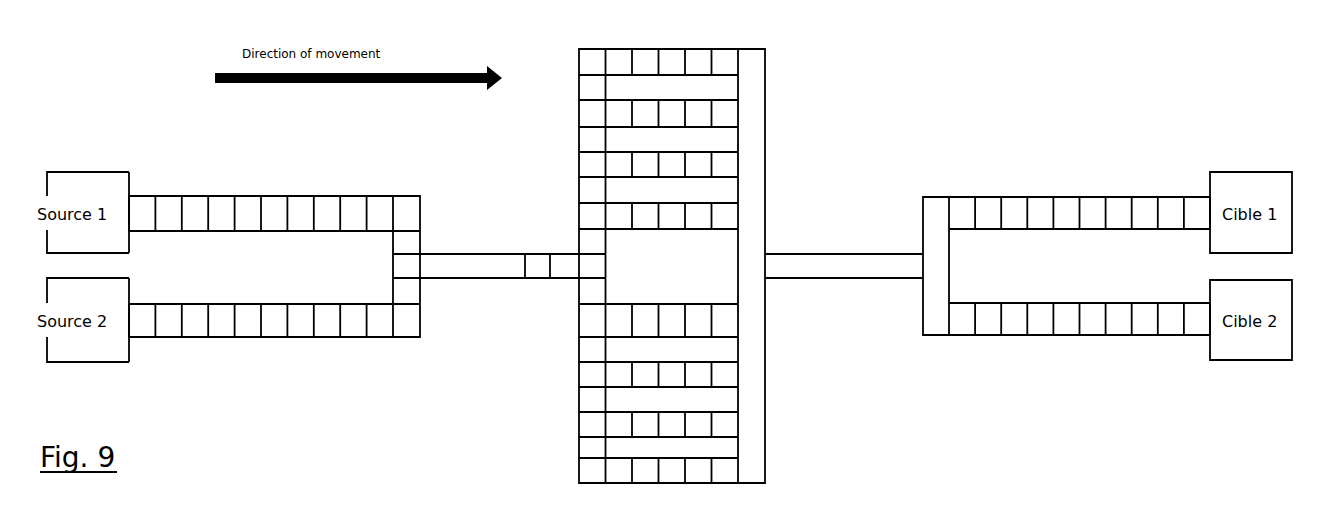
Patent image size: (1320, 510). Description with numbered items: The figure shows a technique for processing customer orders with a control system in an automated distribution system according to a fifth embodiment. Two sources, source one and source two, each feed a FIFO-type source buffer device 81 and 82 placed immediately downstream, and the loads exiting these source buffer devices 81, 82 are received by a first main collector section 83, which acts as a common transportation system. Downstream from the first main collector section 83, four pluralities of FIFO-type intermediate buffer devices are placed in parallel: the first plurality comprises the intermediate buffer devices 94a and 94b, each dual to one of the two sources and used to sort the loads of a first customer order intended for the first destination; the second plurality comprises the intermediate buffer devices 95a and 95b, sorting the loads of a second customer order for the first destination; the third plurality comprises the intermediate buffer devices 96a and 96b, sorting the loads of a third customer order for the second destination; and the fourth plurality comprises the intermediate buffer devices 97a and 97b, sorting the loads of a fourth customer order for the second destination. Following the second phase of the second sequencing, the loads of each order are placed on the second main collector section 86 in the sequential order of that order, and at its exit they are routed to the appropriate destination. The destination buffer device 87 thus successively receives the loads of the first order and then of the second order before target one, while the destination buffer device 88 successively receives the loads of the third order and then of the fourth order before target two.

The source buffer device 81 is at (277, 231).
The source buffer device 82 is at (277, 337).
The first main collector section 83 is at (458, 278).
The second main collector section 86 is at (825, 253).
The destination buffer device 87 is at (998, 197).
The destination buffer device 88 is at (998, 335).
The intermediate buffer device 94a is at (698, 36).
The intermediate buffer device 94b is at (702, 98).
The intermediate buffer device 95a is at (702, 150).
The intermediate buffer device 95b is at (702, 201).
The intermediate buffer device 96a is at (700, 303).
The intermediate buffer device 96b is at (700, 361).
The intermediate buffer device 97a is at (700, 411).
The intermediate buffer device 97b is at (700, 457).